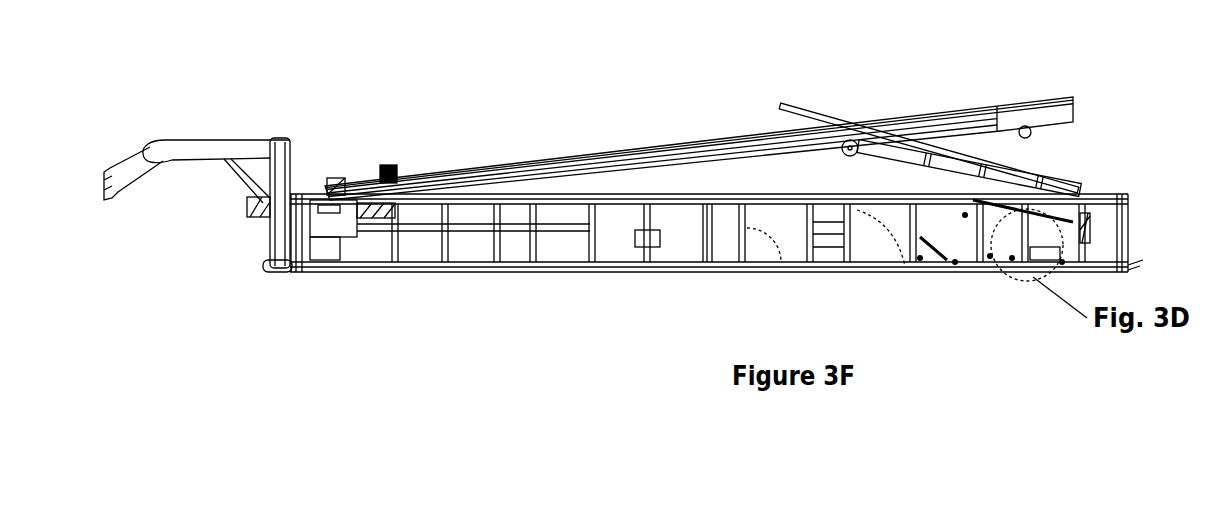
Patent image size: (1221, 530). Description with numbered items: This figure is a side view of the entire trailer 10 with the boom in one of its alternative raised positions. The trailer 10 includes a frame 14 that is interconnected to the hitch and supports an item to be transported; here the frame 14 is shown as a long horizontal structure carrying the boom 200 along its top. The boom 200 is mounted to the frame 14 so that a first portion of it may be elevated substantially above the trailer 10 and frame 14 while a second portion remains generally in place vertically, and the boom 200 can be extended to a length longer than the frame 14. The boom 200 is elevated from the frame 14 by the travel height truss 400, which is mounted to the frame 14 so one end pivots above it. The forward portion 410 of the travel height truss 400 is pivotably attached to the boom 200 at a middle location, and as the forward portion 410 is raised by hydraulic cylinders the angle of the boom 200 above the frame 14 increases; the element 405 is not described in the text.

The trailer 10 is at (505, 88).
The frame 14 is at (360, 270).
The boom 200 is at (1028, 92).
The ramp deck 405 is at (875, 110).
The forward portion of travel height truss 410 is at (782, 108).
The travel height truss 400 is at (925, 175).